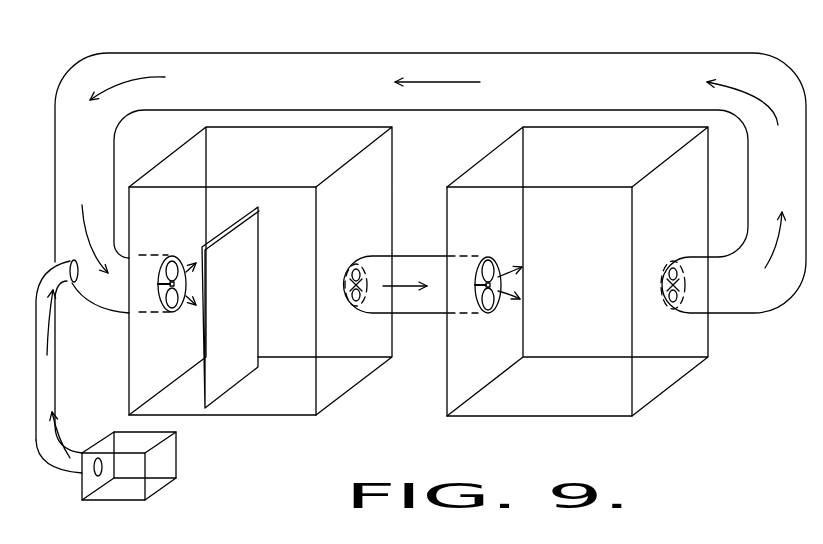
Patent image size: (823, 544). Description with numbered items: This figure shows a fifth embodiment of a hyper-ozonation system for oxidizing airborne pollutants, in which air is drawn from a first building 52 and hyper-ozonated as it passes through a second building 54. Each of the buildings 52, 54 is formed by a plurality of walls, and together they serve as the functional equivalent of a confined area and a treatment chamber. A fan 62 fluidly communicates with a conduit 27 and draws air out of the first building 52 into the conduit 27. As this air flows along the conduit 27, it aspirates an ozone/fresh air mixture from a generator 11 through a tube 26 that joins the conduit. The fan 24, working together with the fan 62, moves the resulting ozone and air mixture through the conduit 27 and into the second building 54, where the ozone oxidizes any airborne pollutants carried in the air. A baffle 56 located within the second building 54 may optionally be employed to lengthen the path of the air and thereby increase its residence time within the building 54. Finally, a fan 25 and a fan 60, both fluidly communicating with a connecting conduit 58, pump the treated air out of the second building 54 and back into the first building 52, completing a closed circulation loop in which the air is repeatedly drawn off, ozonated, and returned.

The generator 11 is at (153, 485).
The fan 24 is at (172, 257).
The fan 25 is at (345, 268).
The tube 26 is at (50, 374).
The conduit 27 is at (512, 73).
The first building 52 is at (555, 382).
The second building 54 is at (282, 377).
The baffle 56 is at (237, 268).
The conduit 58 is at (411, 262).
The fan 60 is at (489, 258).
The fan 62 is at (660, 274).